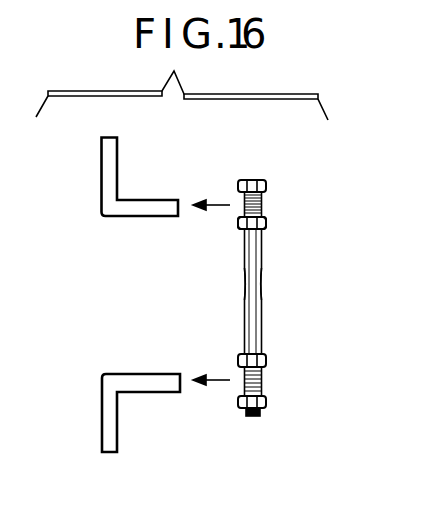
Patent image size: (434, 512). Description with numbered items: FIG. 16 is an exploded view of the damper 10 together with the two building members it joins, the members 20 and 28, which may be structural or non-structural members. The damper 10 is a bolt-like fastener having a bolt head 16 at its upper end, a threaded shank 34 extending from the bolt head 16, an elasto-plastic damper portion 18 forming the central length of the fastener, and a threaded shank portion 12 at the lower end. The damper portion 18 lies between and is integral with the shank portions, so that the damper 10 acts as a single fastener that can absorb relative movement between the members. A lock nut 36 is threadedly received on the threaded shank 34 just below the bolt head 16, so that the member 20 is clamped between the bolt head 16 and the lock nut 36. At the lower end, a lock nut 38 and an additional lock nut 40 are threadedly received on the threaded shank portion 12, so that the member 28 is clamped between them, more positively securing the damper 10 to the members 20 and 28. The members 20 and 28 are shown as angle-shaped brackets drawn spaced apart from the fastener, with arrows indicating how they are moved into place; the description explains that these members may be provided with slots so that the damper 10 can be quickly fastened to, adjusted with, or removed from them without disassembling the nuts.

The damper 10 is at (238, 308).
The threaded shank portion 12 is at (255, 419).
The bolt head 16 is at (252, 180).
The elasto-plastic damper portion 18 is at (261, 290).
The building member 20 is at (100, 169).
The member 28 is at (102, 426).
The shank 34 is at (262, 208).
The lock nut 36 is at (240, 230).
The lock nut 38 is at (266, 359).
The additional lock nut 40 is at (266, 402).